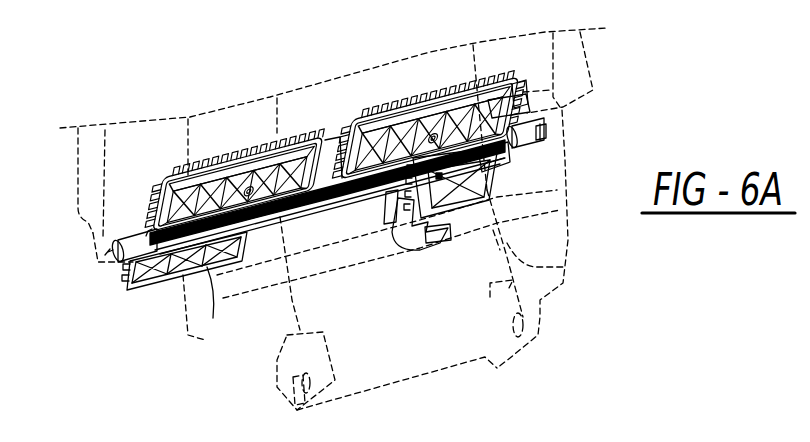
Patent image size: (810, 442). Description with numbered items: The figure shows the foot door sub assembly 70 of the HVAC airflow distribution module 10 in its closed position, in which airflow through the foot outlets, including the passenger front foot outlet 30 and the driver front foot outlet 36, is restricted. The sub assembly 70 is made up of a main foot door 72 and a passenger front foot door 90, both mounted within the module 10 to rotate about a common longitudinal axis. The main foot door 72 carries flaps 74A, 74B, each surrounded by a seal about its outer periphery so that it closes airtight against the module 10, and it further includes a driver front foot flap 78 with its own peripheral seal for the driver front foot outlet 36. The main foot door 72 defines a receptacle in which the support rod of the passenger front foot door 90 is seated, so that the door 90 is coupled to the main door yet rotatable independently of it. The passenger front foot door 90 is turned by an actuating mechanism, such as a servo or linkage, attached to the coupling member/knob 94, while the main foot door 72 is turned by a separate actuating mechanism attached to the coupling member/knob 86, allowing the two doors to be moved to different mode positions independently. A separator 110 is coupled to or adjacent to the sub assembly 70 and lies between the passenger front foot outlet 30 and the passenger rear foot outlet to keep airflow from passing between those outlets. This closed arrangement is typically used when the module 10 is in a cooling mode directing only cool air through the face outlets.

The HVAC airflow distribution module 10 is at (103, 98).
The passenger front foot outlet 30 is at (572, 237).
The driver front foot outlet 36 is at (210, 340).
The foot door sub assembly 70 is at (358, 103).
The main foot door 72 is at (338, 205).
The flap 74A is at (430, 127).
The flap 74B is at (248, 178).
The driver front foot flap 78 is at (163, 267).
The coupling member/knob 86 is at (140, 247).
The passenger front foot door 90 is at (457, 186).
The coupling member/knob 94 is at (546, 134).
The separator 110 is at (417, 238).